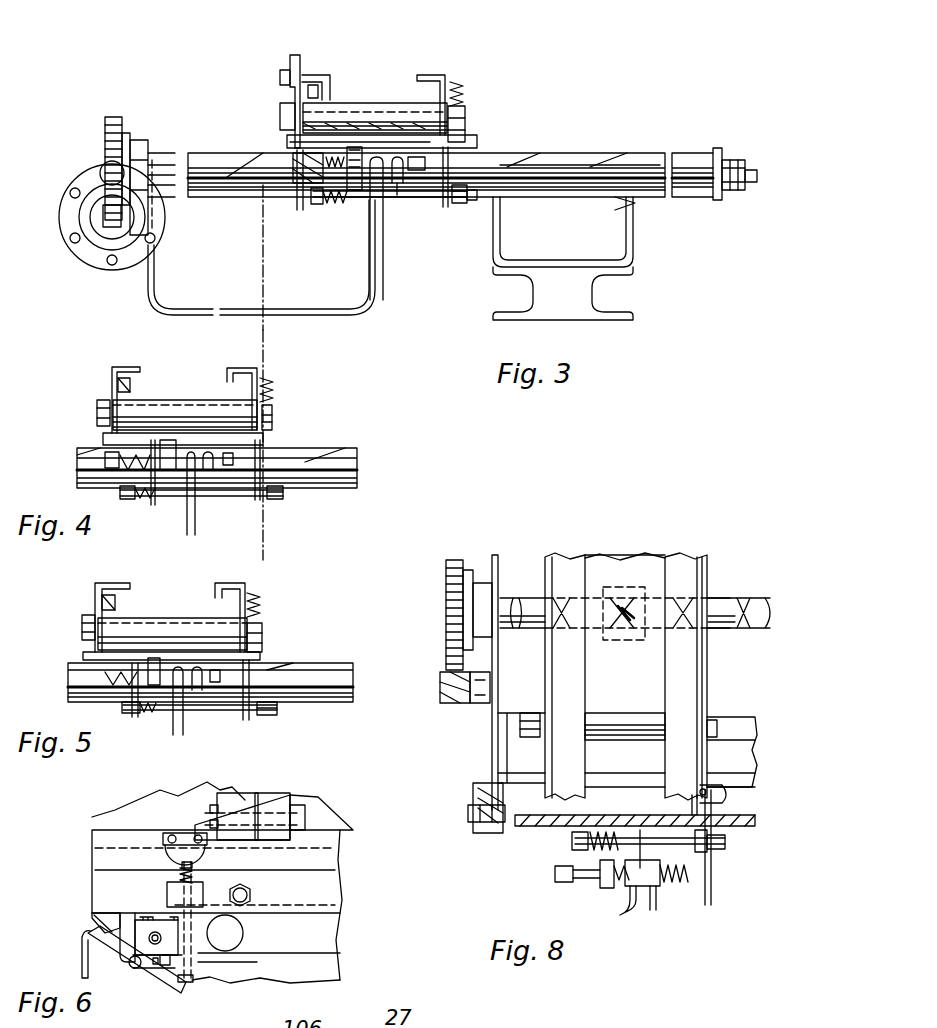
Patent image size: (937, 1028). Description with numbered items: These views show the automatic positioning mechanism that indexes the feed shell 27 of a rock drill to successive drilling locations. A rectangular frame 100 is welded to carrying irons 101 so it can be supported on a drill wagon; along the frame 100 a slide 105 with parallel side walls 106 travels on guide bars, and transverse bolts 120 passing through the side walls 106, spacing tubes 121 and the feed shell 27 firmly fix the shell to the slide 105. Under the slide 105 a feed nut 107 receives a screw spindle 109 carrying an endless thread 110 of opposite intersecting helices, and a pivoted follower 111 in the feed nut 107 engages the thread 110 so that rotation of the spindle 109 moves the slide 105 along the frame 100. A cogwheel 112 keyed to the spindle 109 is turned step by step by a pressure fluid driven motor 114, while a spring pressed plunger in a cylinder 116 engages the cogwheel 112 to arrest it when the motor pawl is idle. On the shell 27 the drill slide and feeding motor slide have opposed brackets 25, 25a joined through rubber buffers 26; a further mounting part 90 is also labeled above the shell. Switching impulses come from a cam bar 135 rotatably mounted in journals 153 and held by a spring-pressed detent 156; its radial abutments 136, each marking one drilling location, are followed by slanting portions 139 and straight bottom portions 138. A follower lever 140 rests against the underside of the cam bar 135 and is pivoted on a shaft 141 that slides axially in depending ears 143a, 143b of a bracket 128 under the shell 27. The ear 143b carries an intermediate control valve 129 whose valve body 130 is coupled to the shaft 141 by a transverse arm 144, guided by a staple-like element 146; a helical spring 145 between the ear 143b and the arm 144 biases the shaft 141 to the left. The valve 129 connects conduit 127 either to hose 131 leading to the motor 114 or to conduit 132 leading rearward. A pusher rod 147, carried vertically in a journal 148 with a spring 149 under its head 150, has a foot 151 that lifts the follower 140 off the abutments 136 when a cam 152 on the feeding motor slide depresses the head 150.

In FIG. 6, the opposed brackets 25 is at (208, 823).
In FIG. 6, the opposed bracket 25a is at (312, 817).
In FIG. 6, the rubber buffers 26 is at (280, 793).
In FIG. 3, the feed shell 27 is at (436, 70).
In FIG. 4, the feed shell 27 is at (122, 359).
In FIG. 5, the feed shell 27 is at (95, 578).
In FIG. 8, the feed shell 27 is at (689, 560).
In FIG. 3, the mounting bracket 90 is at (292, 62).
In FIG. 8, the rectangular frame 100 is at (497, 565).
In FIG. 3, the carrying irons 101 is at (623, 243).
In FIG. 3, the slide 105 is at (305, 135).
In FIG. 4, the slide 105 is at (188, 411).
In FIG. 5, the slide 105 is at (172, 626).
In FIG. 8, the slide 105 is at (650, 680).
In FIG. 6, the side walls 106 is at (317, 893).
In FIG. 8, the side walls 106 is at (548, 648).
In FIG. 8, the feed nut 107 is at (616, 590).
In FIG. 8, the screw spindle 109 is at (712, 607).
In FIG. 8, the endless thread 110 is at (750, 613).
In FIG. 8, the follower 111 is at (608, 640).
In FIG. 3, the cogwheel 112 is at (120, 125).
In FIG. 8, the cogwheel 112 is at (455, 598).
In FIG. 3, the pressure fluid driven motor 114 is at (100, 220).
In FIG. 3, the cylinder 116 is at (112, 168).
In FIG. 8, the cylinder 116 is at (462, 705).
In FIG. 6, the transverse bolts 120 is at (247, 887).
In FIG. 8, the transverse bolts 120 is at (712, 722).
In FIG. 8, the spacing tubes 121 is at (612, 722).
In FIG. 3, the conduit 127 is at (455, 115).
In FIG. 3, the bracket 128 is at (440, 153).
In FIG. 3, the intermediate control valve 129 is at (367, 157).
In FIG. 4, the intermediate control valve 129 is at (177, 450).
In FIG. 5, the intermediate control valve 129 is at (170, 672).
In FIG. 8, the intermediate control valve 129 is at (615, 880).
In FIG. 3, the valve body 130 is at (343, 167).
In FIG. 4, the valve body 130 is at (152, 440).
In FIG. 8, the valve body 130 is at (590, 878).
In FIG. 3, the hose 131 is at (235, 312).
In FIG. 3, the conduit 132 is at (383, 185).
In FIG. 3, the cam bar 135 is at (257, 188).
In FIG. 4, the cam bar 135 is at (337, 480).
In FIG. 5, the cam bar 135 is at (345, 680).
In FIG. 6, the cam bar 135 is at (167, 957).
In FIG. 8, the cam bar 135 is at (740, 822).
In FIG. 3, the radial abutments 136 is at (457, 193).
In FIG. 4, the radial abutments 136 is at (253, 477).
In FIG. 5, the radial abutments 136 is at (258, 693).
In FIG. 3, the straight bottom portions 138 is at (535, 190).
In FIG. 4, the straight bottom portions 138 is at (315, 480).
In FIG. 5, the straight bottom portions 138 is at (295, 700).
In FIG. 3, the slanting portions 139 is at (590, 200).
In FIG. 3, the follower lever 140 is at (455, 205).
In FIG. 4, the follower lever 140 is at (263, 500).
In FIG. 5, the follower lever 140 is at (265, 712).
In FIG. 6, the follower lever 140 is at (147, 970).
In FIG. 8, the follower lever 140 is at (712, 807).
In FIG. 3, the shaft 141 is at (427, 193).
In FIG. 4, the shaft 141 is at (217, 493).
In FIG. 8, the shaft 141 is at (687, 850).
In FIG. 3, the depending ear 143a is at (553, 167).
In FIG. 8, the depending ear 143a is at (710, 870).
In FIG. 3, the depending ear 143b is at (337, 193).
In FIG. 8, the depending ear 143b is at (603, 848).
In FIG. 4, the transverse arm 144 is at (123, 490).
In FIG. 8, the transverse arm 144 is at (580, 868).
In FIG. 3, the helical spring 145 is at (345, 203).
In FIG. 5, the helical spring 145 is at (148, 712).
In FIG. 8, the helical spring 145 is at (590, 840).
In FIG. 3, the staple-like element 146 is at (312, 185).
In FIG. 6, the pusher rod 147 is at (190, 915).
In FIG. 8, the pusher rod 147 is at (703, 788).
In FIG. 6, the journal 148 is at (170, 897).
In FIG. 6, the spring 149 is at (183, 870).
In FIG. 6, the head 150 is at (190, 870).
In FIG. 6, the foot 151 is at (163, 957).
In FIG. 8, the foot 151 is at (706, 783).
In FIG. 6, the cam 152 is at (188, 845).
In FIG. 8, the journals 153 is at (475, 815).
In FIG. 8, the spring-pressed detent 156 is at (480, 800).